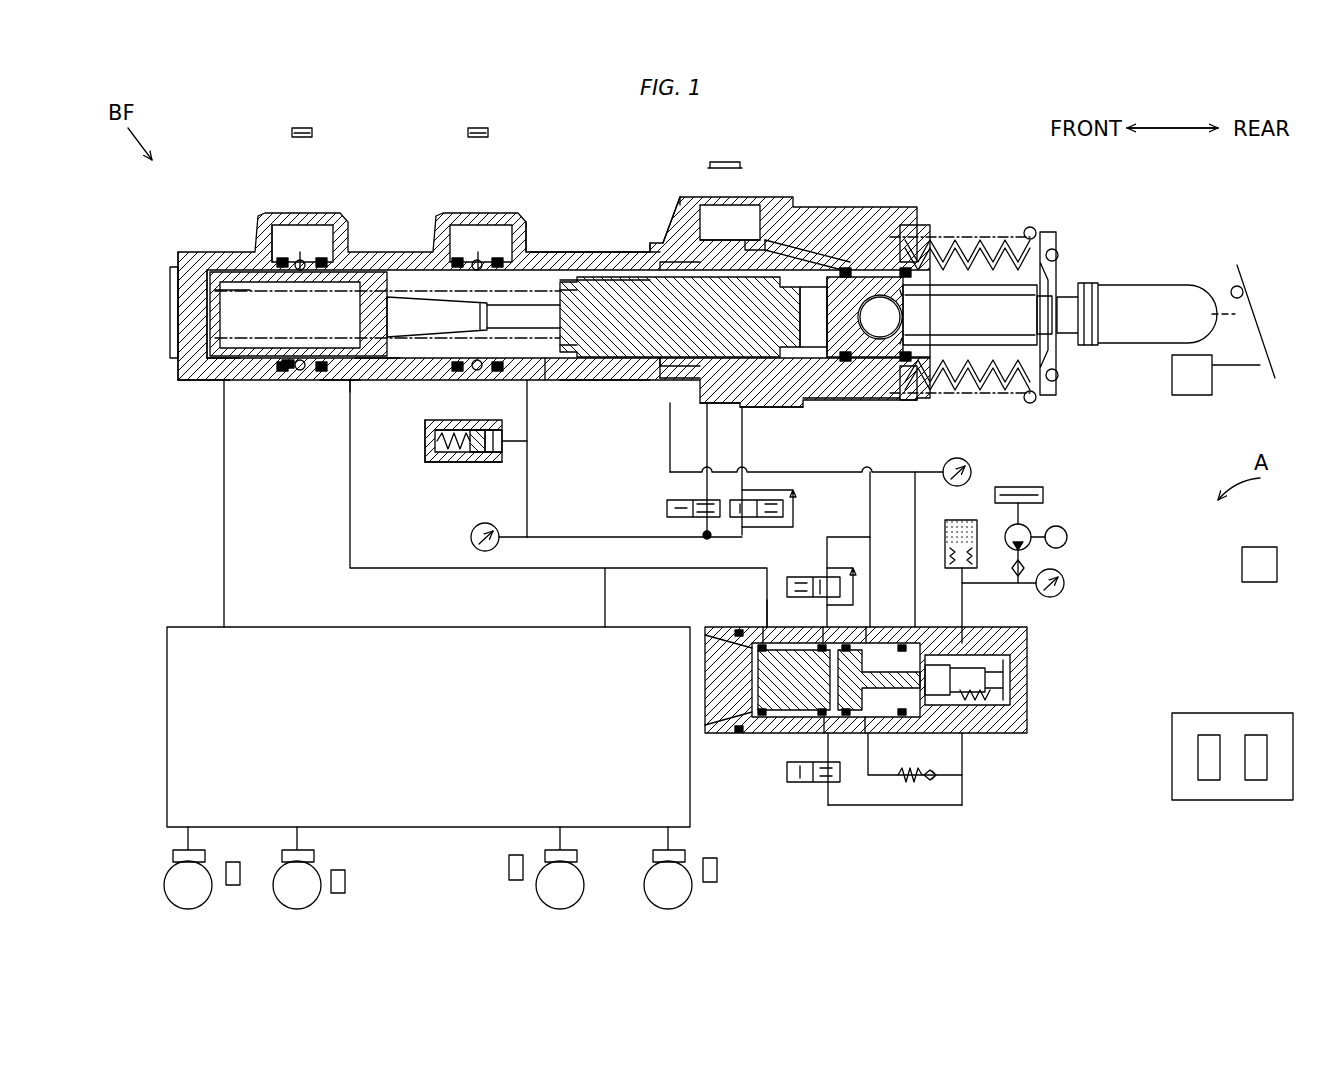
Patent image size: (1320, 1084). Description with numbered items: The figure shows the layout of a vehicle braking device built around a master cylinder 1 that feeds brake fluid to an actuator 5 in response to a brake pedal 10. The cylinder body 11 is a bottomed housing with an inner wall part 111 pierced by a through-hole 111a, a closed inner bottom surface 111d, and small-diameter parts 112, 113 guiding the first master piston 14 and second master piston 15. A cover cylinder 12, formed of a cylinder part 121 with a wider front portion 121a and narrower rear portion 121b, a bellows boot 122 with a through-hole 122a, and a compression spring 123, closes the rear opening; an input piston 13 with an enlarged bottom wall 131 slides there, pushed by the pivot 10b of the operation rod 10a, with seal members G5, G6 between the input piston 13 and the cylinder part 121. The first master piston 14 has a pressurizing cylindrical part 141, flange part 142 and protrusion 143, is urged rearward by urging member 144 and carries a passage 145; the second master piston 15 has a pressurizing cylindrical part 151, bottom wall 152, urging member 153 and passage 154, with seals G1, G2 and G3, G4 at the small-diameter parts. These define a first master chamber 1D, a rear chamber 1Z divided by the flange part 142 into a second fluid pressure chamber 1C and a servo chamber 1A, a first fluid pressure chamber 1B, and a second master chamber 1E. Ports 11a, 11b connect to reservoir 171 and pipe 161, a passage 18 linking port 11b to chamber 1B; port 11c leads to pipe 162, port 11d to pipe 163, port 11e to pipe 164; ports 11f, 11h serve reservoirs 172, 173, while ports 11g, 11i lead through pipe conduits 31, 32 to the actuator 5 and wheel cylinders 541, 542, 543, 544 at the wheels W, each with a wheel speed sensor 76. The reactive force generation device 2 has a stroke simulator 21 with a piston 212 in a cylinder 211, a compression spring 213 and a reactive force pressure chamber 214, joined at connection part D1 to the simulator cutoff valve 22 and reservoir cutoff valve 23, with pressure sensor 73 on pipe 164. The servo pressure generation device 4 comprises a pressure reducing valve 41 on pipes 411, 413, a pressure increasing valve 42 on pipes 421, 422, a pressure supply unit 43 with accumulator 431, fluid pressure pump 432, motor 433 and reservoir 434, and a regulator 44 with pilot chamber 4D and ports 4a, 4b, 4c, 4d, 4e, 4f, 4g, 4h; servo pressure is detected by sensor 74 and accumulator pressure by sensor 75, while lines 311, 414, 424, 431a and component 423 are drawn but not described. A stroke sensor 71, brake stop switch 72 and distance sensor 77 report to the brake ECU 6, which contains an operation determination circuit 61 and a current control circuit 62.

The master cylinder 1 is at (158, 268).
The reactive force generation device 2 is at (445, 508).
The servo pressure generation device 4 is at (1040, 655).
The actuator 5 is at (200, 622).
The brake ECU 6 is at (1172, 722).
The brake pedal 10 is at (1212, 292).
The operation rod 10a is at (1005, 305).
The pivot 10b is at (975, 300).
The cylinder body 11 is at (190, 252).
The port 11a is at (748, 400).
The port 11b is at (750, 237).
The port 11c is at (705, 395).
The port 11d is at (668, 378).
The port 11e is at (550, 362).
The port 11f is at (470, 260).
The port 11g is at (357, 392).
The port 11h is at (312, 258).
The port 11i is at (224, 383).
The cover cylinder 12 is at (1062, 480).
The input piston 13 is at (905, 300).
The first master piston 14 is at (585, 362).
The second master piston 15 is at (370, 280).
The passage 18 is at (815, 290).
The stroke simulator 21 is at (450, 422).
The simulator cutoff valve 22 is at (685, 498).
The reservoir cutoff valve 23 is at (742, 498).
The pipe conduit 31 is at (350, 518).
The pipe conduit 32 is at (224, 530).
The pressure reducing valve 41 is at (795, 577).
The pressure increasing valve 42 is at (785, 780).
The pressure supply unit 43 is at (1100, 532).
The regulator 44 is at (1018, 700).
The operation determination circuit 61 is at (1210, 735).
The current control circuit 62 is at (1256, 735).
The stroke sensor 71 is at (1192, 395).
The brake stop switch 72 is at (1232, 290).
The pressure sensor 73 is at (480, 524).
The pressure sensor 74 is at (950, 482).
The pressure sensor 75 is at (1055, 597).
The wheel speed sensor 76 is at (240, 875).
The sensor 77 is at (1262, 548).
The inner wall part 111 is at (672, 262).
The through-hole 111a is at (660, 262).
The inner bottom surface 111d is at (192, 358).
The small-diameter part 112 is at (522, 382).
The small-diameter part 113 is at (335, 380).
The cylinder part 121 is at (1000, 485).
The front portion 121a is at (880, 375).
The rear portion 121b is at (930, 385).
The boot 122 is at (1042, 390).
The through-hole 122a is at (1048, 296).
The compression spring 123 is at (1045, 380).
The bottom wall 131 is at (880, 297).
The pressurizing cylindrical part 141 is at (560, 270).
The flange part 142 is at (600, 270).
The protrusion 143 is at (790, 280).
The urging member 144 is at (402, 297).
The passage 145 is at (432, 303).
The pressurizing cylindrical part 151 is at (296, 366).
The bottom wall 152 is at (362, 365).
The urging member 153 is at (237, 290).
The passage 154 is at (273, 262).
The pipe 161 is at (762, 455).
The pipe 162 is at (700, 440).
The pipe 163 is at (668, 430).
The pipe 164 is at (580, 400).
The reservoir 171 is at (725, 197).
The reservoir 172 is at (478, 213).
The reservoir 173 is at (302, 213).
The cylinder 211 is at (480, 422).
The piston 212 is at (482, 452).
The compression spring 213 is at (445, 452).
The reactive force pressure chamber 214 is at (492, 452).
The pipe branch 311 is at (660, 568).
The pipe 411 is at (838, 532).
The pipe 413 is at (820, 627).
The pipe 414 is at (890, 534).
The pipe 421 is at (825, 748).
The pipe 422 is at (850, 805).
The relief valve 423 is at (905, 780).
The pipe 424 is at (866, 775).
The accumulator 431 is at (945, 545).
The pipe 431a is at (965, 605).
The fluid pressure pump 432 is at (1006, 526).
The motor 433 is at (1064, 526).
The reservoir 434 is at (1043, 497).
The wheel cylinder 541 is at (190, 852).
The wheel cylinder 542 is at (298, 852).
The wheel cylinder 543 is at (560, 852).
The wheel cylinder 544 is at (668, 852).
The servo chamber 1A is at (650, 362).
The first fluid pressure chamber 1B is at (835, 375).
The second fluid pressure chamber 1C is at (600, 362).
The first master chamber 1D is at (425, 441).
The second master chamber 1E is at (236, 383).
The rear chamber 1Z is at (530, 262).
The port 4a is at (962, 632).
The port 4b is at (962, 733).
The port 4c is at (915, 627).
The port 4d is at (870, 627).
The port 4e is at (870, 733).
The port 4f is at (827, 627).
The port 4g is at (828, 733).
The port 4h is at (765, 627).
The pilot chamber 4D is at (760, 728).
The seal member G1 is at (497, 262).
The seal member G2 is at (455, 262).
The seal member G3 is at (325, 262).
The seal member G4 is at (278, 262).
The seal member G5 is at (848, 272).
The seal member G6 is at (908, 272).
The connection part D1 is at (700, 533).
The wheel W is at (193, 908).